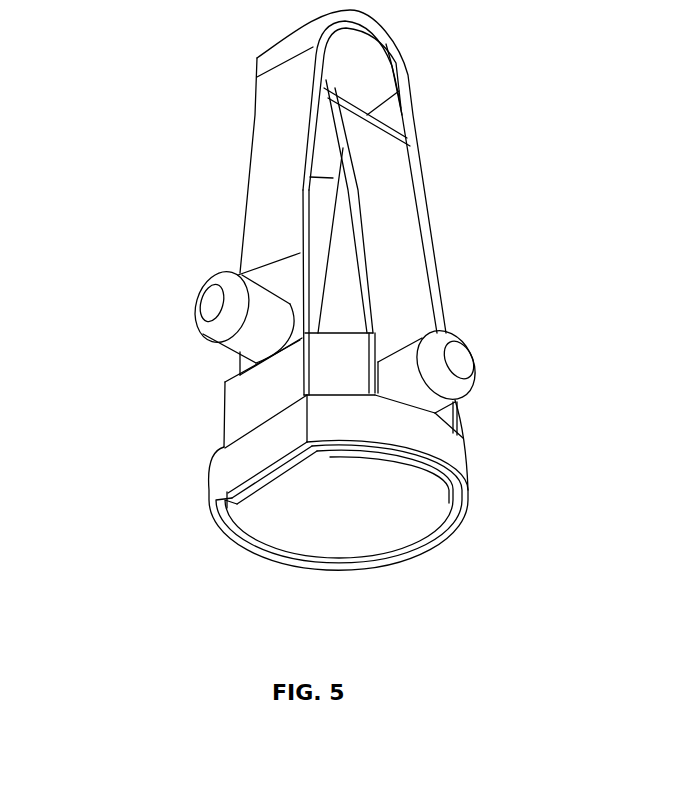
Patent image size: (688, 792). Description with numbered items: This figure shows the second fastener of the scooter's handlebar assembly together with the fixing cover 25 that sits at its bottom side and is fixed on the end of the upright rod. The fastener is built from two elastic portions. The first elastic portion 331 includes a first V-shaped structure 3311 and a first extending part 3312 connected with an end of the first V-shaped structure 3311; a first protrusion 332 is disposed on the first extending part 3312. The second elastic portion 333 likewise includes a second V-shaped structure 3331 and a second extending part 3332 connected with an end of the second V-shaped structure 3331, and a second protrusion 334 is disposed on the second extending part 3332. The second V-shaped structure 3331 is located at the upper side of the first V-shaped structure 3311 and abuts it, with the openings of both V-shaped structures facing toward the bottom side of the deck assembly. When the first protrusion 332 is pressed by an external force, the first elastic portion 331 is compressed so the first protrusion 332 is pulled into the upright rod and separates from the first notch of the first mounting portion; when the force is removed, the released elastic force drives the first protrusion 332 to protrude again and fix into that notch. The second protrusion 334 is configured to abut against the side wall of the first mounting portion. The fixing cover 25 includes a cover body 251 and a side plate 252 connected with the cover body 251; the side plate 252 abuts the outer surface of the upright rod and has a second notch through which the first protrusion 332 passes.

The fixing cover 25 is at (97, 407).
The cover body 251 is at (317, 537).
The side plate 252 is at (267, 393).
The first elastic portion 331 is at (533, 133).
The first V-shaped structure 3311 is at (385, 195).
The first extending part 3312 is at (390, 342).
The first protrusion 332 is at (460, 358).
The second elastic portion 333 is at (137, 47).
The second V-shaped structure 3331 is at (262, 118).
The second extending part 3332 is at (282, 270).
The second protrusion 334 is at (230, 292).